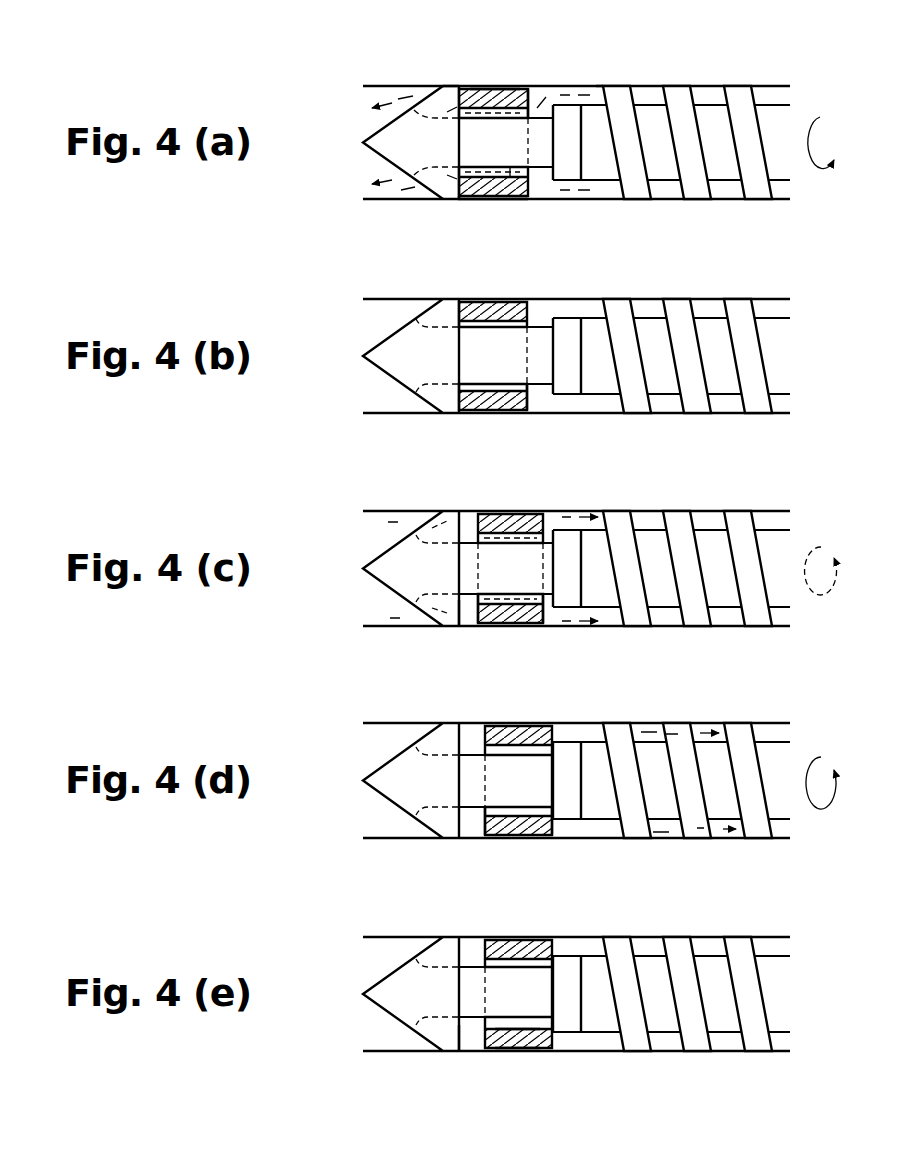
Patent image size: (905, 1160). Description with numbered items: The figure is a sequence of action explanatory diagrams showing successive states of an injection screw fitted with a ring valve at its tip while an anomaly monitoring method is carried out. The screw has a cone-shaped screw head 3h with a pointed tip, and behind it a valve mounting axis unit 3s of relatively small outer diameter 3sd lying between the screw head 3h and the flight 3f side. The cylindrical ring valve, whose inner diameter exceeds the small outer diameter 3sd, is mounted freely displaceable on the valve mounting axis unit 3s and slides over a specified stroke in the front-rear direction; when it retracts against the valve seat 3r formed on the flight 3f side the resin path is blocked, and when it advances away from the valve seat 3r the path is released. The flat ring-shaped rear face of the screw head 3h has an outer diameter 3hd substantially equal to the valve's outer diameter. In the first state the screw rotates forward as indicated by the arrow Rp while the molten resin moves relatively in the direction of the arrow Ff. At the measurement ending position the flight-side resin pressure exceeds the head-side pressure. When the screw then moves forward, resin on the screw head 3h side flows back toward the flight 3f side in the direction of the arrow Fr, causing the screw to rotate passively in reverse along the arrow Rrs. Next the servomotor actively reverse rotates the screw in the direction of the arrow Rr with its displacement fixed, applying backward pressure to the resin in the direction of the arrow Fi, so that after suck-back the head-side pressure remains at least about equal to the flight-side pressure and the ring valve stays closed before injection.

The screw head 3h is at (375, 128).
The outer diameter 3hd is at (452, 85).
The flight 3f is at (617, 86).
The valve seat 3r is at (537, 176).
The valve mounting axis unit 3s is at (470, 224).
The small outer diameter 3sd is at (492, 200).
The arrow Ff is at (405, 97).
The arrow Fr is at (418, 526).
The arrow Fi is at (650, 730).
The arrow Rp is at (820, 117).
The arrow Rr is at (820, 757).
The arrow Rrs is at (818, 545).